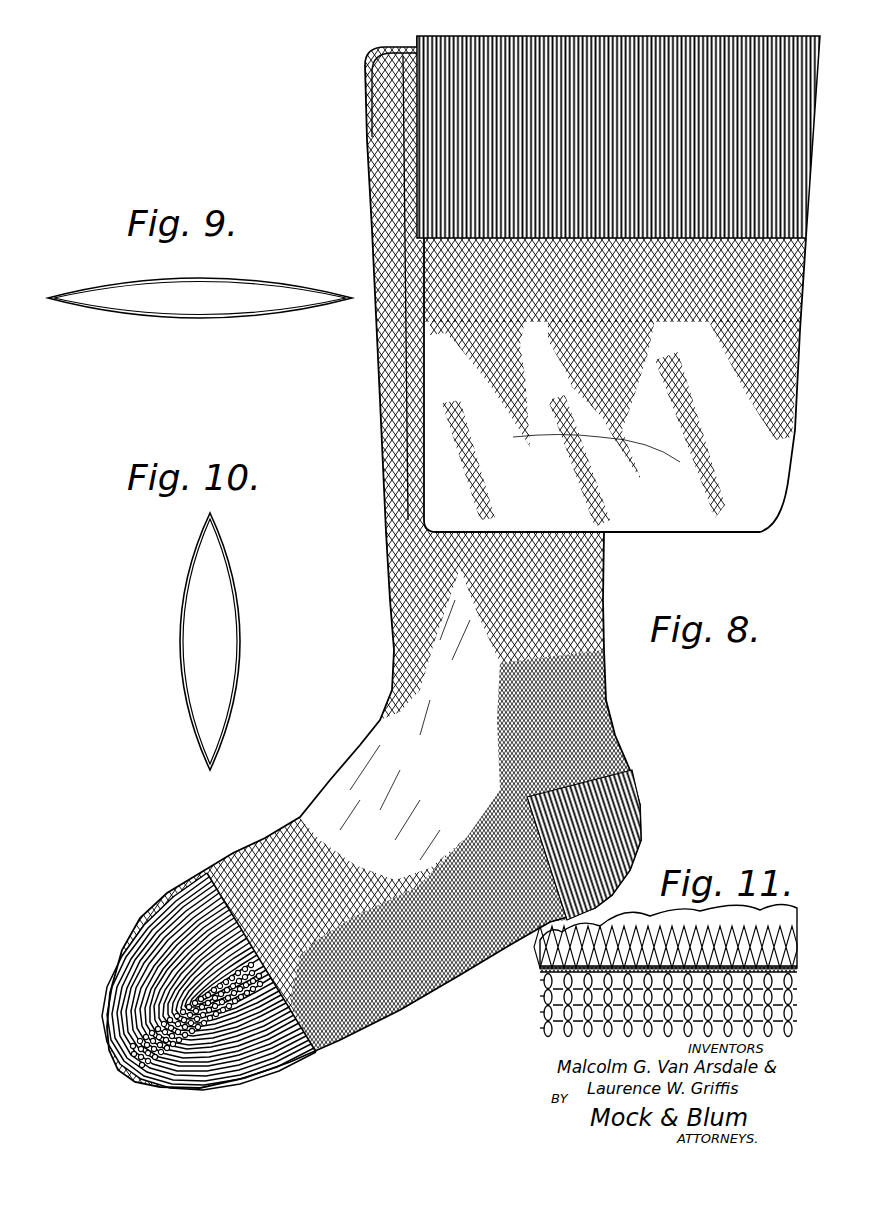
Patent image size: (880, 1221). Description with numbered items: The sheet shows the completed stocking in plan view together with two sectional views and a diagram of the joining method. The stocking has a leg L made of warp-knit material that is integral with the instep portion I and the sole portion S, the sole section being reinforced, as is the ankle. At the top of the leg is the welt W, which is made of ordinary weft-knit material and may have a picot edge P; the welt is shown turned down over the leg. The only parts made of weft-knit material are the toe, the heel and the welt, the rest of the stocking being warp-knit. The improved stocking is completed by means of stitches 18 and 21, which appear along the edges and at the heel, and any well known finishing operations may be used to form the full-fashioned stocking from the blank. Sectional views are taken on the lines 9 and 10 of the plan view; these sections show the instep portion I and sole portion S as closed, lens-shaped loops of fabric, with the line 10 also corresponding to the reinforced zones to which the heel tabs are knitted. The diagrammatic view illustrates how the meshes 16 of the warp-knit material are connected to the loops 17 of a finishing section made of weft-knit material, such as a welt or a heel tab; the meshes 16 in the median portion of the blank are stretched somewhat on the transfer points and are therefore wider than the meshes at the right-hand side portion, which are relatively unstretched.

In FIG. 8, the stitches 18 is at (791, 414).
In FIG. 8, the stitches 21 is at (528, 934).
In FIG. 8, the picot edge P is at (417, 40).
In FIG. 8, the welt W is at (706, 45).
In FIG. 8, the leg L is at (462, 353).
In FIG. 8, the section line 9- 9 is at (359, 625).
In FIG. 8, the section line 10-10 / reinforced zones 10 is at (170, 852).
In FIG. 9, the section line 10-10 / reinforced zones 10 is at (290, 285).
In FIG. 9, the instep portion I is at (104, 314).
In FIG. 10, the instep portion I is at (238, 597).
In FIG. 10, the sole portion S is at (238, 696).
In FIG. 11, the meshes 16 is at (667, 904).
In FIG. 11, the loops 17 is at (548, 999).